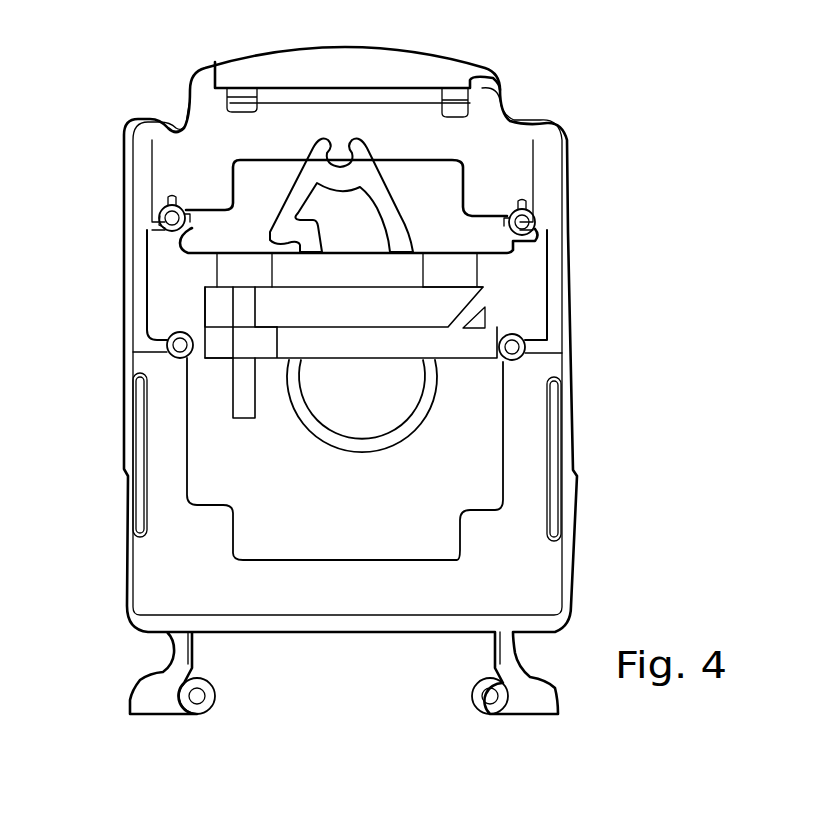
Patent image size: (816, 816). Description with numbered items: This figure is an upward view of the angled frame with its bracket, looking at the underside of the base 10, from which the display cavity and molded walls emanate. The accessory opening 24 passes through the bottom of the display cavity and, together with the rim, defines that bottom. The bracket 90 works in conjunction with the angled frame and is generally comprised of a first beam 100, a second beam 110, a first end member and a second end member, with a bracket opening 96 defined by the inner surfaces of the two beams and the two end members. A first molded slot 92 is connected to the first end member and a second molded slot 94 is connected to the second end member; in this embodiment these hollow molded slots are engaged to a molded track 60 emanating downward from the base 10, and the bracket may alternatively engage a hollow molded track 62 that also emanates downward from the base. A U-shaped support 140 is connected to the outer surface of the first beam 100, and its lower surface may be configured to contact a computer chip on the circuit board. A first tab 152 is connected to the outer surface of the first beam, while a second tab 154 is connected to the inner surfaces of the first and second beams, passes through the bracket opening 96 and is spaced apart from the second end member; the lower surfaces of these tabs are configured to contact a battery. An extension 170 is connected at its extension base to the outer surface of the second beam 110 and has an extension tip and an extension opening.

The base 10 is at (123, 612).
The accessory opening 24 is at (228, 457).
The molded track 60 is at (538, 229).
The hollow molded track 62 is at (163, 348).
The bracket 90 is at (508, 273).
The first molded slot 92 is at (170, 220).
The second molded slot 94 is at (547, 213).
The bracket opening 96 is at (387, 310).
The first beam 100 is at (347, 345).
The second beam 110 is at (333, 268).
The U-shaped support 140 is at (410, 427).
The first tab 152 is at (243, 392).
The second tab 154 is at (245, 308).
The extension 170 is at (377, 183).